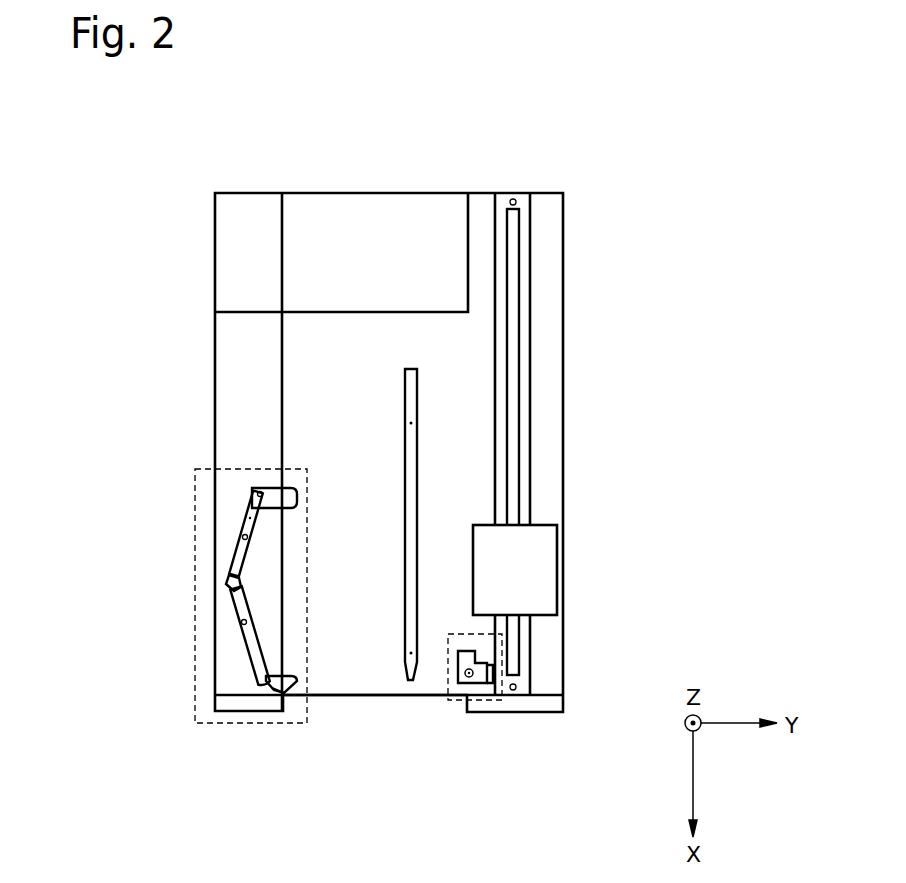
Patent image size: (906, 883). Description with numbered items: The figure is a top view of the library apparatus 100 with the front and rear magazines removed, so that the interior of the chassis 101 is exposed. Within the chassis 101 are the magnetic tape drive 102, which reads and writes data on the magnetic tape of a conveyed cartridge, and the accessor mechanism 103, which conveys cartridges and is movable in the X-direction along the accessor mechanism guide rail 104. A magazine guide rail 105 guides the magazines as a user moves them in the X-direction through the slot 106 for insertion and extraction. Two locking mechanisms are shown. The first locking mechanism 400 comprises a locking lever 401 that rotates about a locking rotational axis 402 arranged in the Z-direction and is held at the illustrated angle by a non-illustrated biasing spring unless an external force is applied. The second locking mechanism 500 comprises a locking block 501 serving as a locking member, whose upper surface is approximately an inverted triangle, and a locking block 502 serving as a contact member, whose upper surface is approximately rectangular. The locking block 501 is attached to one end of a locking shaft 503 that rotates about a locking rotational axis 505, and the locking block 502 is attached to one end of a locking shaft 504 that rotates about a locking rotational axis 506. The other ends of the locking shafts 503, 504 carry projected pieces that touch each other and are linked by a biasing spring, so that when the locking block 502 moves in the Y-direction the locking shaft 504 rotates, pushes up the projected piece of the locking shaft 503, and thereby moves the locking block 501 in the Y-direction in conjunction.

The library apparatus 100 is at (597, 170).
The chassis 101 is at (565, 450).
The magnetic tape drive 102 is at (337, 210).
The accessor mechanism 103 is at (540, 550).
The accessor mechanism guide rail 104 is at (519, 245).
The magazine guide rail 105 is at (417, 390).
The slot 106 is at (370, 695).
The first locking mechanism 400 is at (483, 700).
The locking lever 401 is at (487, 672).
The locking rotational axis 402 is at (465, 677).
The second locking mechanism 500 is at (207, 723).
The locking block 501 is at (272, 688).
The locking block 502 is at (270, 495).
The locking shaft 503 is at (247, 650).
The locking shaft 504 is at (250, 517).
The locking rotational axis 505 is at (243, 620).
The locking rotational axis 506 is at (243, 535).